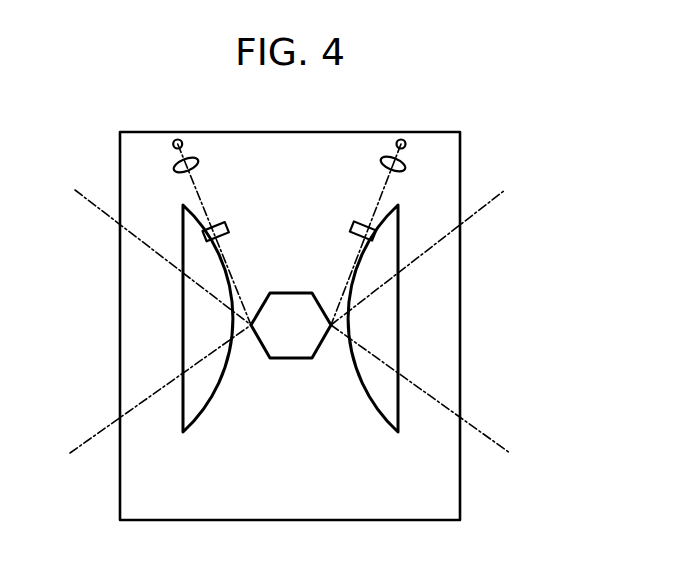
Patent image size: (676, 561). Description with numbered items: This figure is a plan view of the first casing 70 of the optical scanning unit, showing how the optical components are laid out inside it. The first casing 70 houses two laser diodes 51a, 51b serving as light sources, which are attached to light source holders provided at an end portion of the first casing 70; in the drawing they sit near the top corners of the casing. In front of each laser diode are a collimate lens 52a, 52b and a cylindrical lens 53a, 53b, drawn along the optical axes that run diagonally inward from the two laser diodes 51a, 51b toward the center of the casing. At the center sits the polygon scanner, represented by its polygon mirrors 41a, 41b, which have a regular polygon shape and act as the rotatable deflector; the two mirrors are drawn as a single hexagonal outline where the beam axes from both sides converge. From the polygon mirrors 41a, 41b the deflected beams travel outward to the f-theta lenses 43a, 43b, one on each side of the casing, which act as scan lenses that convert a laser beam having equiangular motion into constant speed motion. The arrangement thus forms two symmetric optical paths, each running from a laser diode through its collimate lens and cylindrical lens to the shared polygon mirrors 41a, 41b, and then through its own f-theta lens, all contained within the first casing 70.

The polygon mirror 41a is at (298, 351).
The polygon mirror 41b is at (297, 361).
The f-theta lens 43a is at (133, 314).
The f-theta lens 43b is at (448, 327).
The laser diode 51a is at (405, 138).
The laser diode 51b is at (174, 140).
The collimate lens 52a is at (380, 161).
The collimate lens 52b is at (199, 161).
The cylindrical lens 53a is at (354, 226).
The cylindrical lens 53b is at (223, 226).
The first casing 70 is at (461, 503).